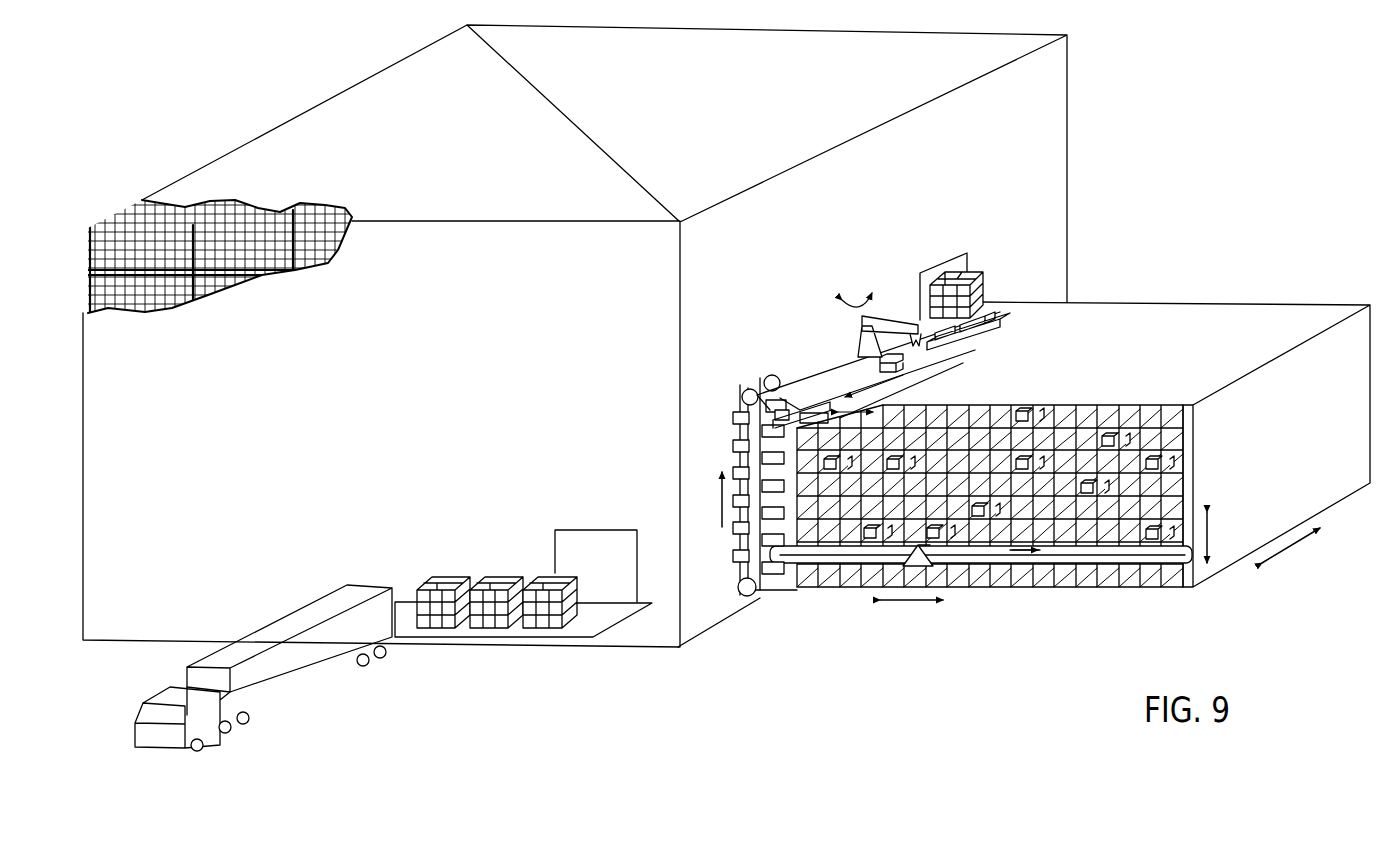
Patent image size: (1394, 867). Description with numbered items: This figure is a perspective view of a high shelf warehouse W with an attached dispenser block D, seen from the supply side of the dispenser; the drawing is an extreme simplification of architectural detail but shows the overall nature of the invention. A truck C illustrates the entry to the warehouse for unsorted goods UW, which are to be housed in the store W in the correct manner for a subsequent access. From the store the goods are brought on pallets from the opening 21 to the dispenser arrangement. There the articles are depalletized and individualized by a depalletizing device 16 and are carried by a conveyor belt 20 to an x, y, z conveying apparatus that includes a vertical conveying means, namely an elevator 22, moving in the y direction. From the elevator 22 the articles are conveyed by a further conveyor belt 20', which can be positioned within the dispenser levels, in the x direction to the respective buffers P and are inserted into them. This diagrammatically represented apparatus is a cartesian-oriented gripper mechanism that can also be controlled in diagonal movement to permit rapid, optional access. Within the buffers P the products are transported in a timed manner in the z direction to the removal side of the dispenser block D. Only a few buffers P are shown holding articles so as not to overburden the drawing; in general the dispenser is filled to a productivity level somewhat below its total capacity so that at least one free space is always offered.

The high shelf warehouse W is at (213, 302).
The dispenser block D is at (1189, 298).
The buffers P is at (1000, 572).
The conveyor belt 20 is at (878, 370).
The further conveyor belt 20' is at (981, 593).
The opening 21 is at (930, 273).
The elevator 22 is at (752, 378).
The depalletizing device 16 is at (898, 312).
The unsorted goods UW is at (980, 283).
The truck C is at (267, 632).